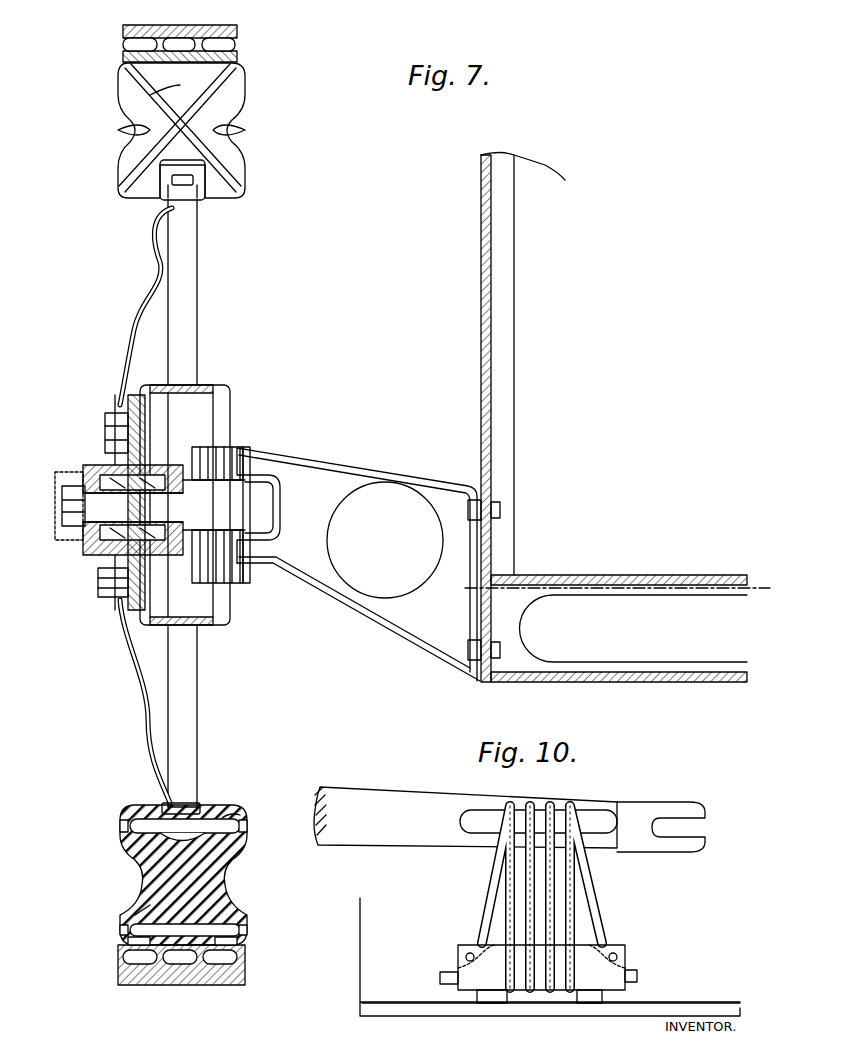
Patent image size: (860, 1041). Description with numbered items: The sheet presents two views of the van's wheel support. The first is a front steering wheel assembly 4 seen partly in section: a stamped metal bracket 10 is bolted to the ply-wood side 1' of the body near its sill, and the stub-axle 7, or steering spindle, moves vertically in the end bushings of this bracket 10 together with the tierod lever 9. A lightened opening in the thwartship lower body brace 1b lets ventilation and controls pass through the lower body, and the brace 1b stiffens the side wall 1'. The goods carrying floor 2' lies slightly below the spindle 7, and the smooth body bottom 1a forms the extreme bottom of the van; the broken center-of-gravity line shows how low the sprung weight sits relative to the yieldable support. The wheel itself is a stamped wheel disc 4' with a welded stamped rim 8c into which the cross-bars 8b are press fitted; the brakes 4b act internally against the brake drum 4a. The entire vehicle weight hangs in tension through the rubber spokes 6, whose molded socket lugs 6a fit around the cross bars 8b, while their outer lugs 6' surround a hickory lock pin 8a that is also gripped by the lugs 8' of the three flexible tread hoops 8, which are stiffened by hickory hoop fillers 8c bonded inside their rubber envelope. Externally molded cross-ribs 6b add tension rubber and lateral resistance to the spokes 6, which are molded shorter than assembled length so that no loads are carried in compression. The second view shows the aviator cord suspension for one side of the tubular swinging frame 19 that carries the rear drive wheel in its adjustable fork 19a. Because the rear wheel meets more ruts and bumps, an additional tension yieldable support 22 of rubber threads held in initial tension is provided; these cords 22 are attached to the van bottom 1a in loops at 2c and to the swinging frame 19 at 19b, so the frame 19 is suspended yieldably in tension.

In FIG. 7, the ply-wood side 1' is at (507, 418).
In FIG. 7, the body bottom 1a is at (665, 682).
In FIG. 10, the body bottom 1a is at (455, 1008).
In FIG. 7, the lower body brace 1b is at (518, 605).
In FIG. 7, the floor 2' is at (632, 575).
In FIG. 10, the loops 2c is at (604, 996).
In FIG. 7, the resilient wheel assembly 4 is at (230, 504).
In FIG. 7, the stamped wheel disc 4' is at (145, 505).
In FIG. 7, the brake drum 4a is at (180, 385).
In FIG. 7, the internally disposed brakes 4b is at (200, 400).
In FIG. 7, the tension spokes 6 is at (185, 504).
In FIG. 7, the lugs 6' is at (184, 942).
In FIG. 7, the molded socket lugs 6a is at (222, 818).
In FIG. 7, the cross-ribs 6b is at (165, 90).
In FIG. 7, the stub-axle 7 is at (100, 510).
In FIG. 7, the tread hoops 8 is at (195, 505).
In FIG. 7, the lugs 8' is at (127, 897).
In FIG. 7, the hickory lock pin 8a is at (240, 928).
In FIG. 7, the cross-bars 8b is at (205, 822).
In FIG. 7, the stamped rim 8c is at (125, 46).
In FIG. 7, the tierod lever 9 is at (243, 580).
In FIG. 7, the bracket 10 is at (362, 463).
In FIG. 10, the swinging frame 19 is at (380, 800).
In FIG. 10, the adjustable fork 19a is at (674, 812).
In FIG. 10, the cord attachment on swinging frame 19b is at (538, 808).
In FIG. 10, the tension yieldable support 22 is at (512, 885).